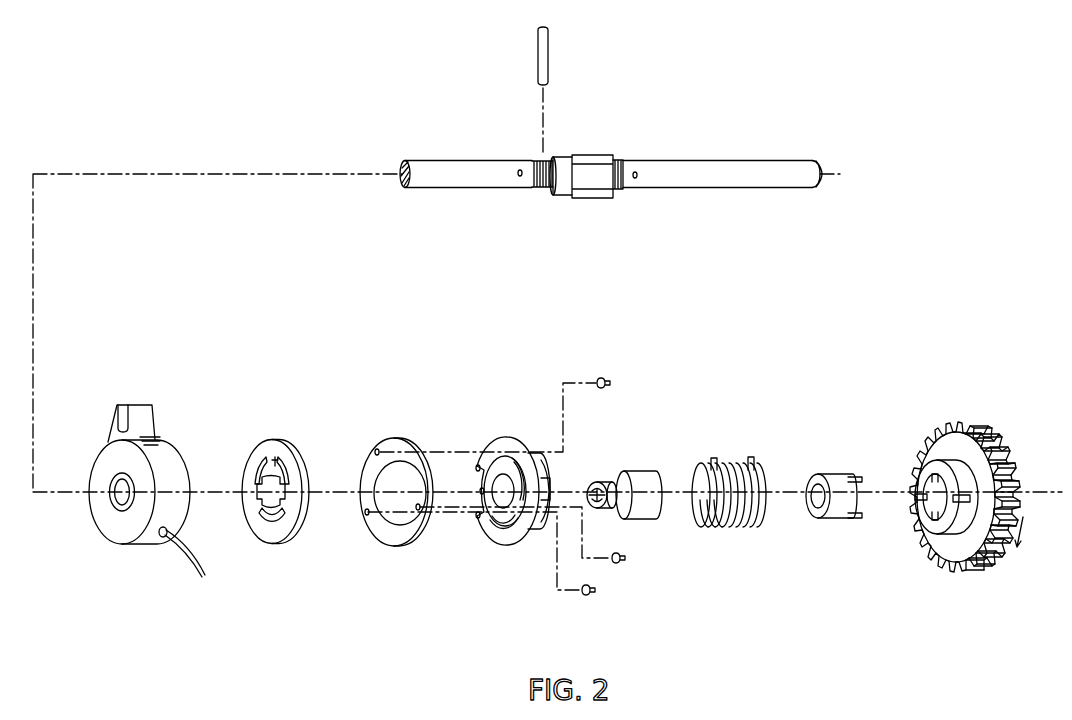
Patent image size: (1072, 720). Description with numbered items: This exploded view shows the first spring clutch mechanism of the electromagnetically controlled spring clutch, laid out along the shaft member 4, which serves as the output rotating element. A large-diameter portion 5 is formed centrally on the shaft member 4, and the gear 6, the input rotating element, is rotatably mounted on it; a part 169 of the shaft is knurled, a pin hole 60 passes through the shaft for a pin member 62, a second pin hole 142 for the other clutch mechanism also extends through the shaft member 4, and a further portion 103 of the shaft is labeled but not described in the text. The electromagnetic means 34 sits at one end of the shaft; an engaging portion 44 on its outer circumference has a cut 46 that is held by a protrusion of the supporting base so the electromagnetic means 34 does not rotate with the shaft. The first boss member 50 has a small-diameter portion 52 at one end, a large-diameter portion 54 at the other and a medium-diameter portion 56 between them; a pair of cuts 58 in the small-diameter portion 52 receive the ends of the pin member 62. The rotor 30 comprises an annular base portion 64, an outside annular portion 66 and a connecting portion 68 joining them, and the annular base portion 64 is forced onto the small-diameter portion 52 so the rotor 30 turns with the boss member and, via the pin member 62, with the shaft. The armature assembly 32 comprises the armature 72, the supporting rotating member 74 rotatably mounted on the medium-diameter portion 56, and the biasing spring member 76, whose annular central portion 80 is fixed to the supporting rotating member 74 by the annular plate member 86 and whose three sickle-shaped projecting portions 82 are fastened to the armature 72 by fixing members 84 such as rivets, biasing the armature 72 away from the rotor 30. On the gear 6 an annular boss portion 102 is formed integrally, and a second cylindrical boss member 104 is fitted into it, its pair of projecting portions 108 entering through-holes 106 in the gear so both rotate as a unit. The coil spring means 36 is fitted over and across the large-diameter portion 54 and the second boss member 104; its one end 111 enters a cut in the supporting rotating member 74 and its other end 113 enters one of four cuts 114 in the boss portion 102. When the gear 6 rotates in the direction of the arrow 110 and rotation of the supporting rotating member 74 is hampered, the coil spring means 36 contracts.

The shaft member 4 is at (467, 190).
The large-diameter portion 5 is at (595, 199).
The gear 6 is at (979, 496).
The rotor 30 is at (281, 505).
The armature assembly 32 is at (508, 491).
The electromagnetic means 34 is at (130, 556).
The coil spring means 36 is at (738, 494).
The engaging portion 44 is at (150, 412).
The cut 46 is at (119, 412).
The first boss member 50 is at (635, 481).
The small-diameter portion 52 is at (599, 510).
The large-diameter portion 54 is at (649, 519).
The medium-diameter portion 56 is at (612, 485).
The cuts 58 is at (597, 482).
The pin hole 60 is at (519, 170).
The pin member 62 is at (549, 54).
The annular base portion 64 is at (258, 515).
The outside annular portion 66 is at (300, 520).
The connecting portion 68 is at (278, 462).
The armature 72 is at (392, 550).
The supporting rotating member 74 is at (548, 485).
The biasing spring member 76 is at (536, 455).
The annular central portion 80 is at (497, 477).
The projecting portions 82 is at (513, 458).
The fixing member 84 is at (600, 377).
The annular plate member 86 is at (477, 469).
The annular boss portion 102 is at (938, 460).
The knurled section 103 is at (541, 190).
The second cylindrical boss member 104 is at (843, 504).
The through-holes 106 is at (920, 540).
The projecting portions 108 is at (855, 476).
The arrow 110 is at (1024, 535).
The one end of coil spring means 111 is at (714, 458).
The other end of coil spring means 113 is at (751, 457).
The cuts 114 is at (934, 478).
The pin hole 142 is at (637, 178).
The knurled part 169 is at (622, 160).